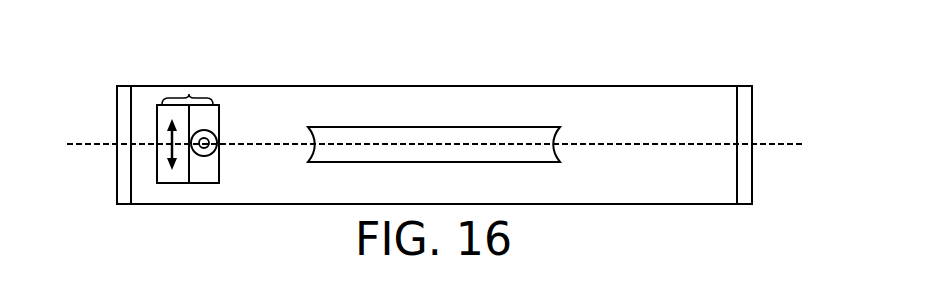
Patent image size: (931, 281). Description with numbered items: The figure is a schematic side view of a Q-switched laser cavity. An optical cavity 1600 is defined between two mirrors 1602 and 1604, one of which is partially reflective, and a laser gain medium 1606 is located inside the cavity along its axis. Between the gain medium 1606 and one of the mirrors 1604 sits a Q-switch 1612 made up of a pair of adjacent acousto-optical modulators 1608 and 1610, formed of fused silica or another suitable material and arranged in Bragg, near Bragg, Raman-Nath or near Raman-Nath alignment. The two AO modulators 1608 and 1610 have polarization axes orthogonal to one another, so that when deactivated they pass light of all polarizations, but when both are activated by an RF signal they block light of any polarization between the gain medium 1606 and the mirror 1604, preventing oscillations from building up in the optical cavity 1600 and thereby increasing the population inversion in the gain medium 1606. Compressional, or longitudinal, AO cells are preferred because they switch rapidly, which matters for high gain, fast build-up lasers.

The optical cavity 1600 is at (643, 86).
The mirror 1602 is at (752, 103).
The mirror 1604 is at (117, 100).
The laser gain medium 1606 is at (522, 127).
The acousto-optical modulator 1608 is at (164, 183).
The acousto-optical modulator 1610 is at (212, 183).
The Q-switch 1612 is at (189, 96).